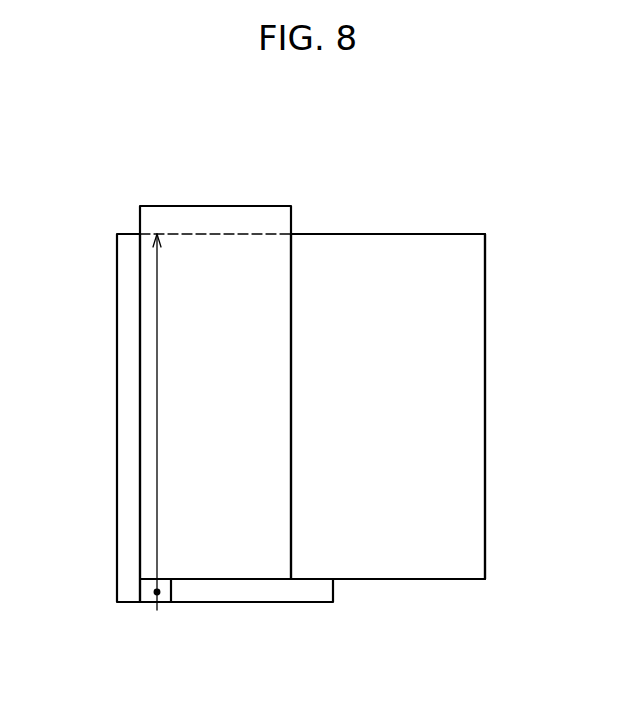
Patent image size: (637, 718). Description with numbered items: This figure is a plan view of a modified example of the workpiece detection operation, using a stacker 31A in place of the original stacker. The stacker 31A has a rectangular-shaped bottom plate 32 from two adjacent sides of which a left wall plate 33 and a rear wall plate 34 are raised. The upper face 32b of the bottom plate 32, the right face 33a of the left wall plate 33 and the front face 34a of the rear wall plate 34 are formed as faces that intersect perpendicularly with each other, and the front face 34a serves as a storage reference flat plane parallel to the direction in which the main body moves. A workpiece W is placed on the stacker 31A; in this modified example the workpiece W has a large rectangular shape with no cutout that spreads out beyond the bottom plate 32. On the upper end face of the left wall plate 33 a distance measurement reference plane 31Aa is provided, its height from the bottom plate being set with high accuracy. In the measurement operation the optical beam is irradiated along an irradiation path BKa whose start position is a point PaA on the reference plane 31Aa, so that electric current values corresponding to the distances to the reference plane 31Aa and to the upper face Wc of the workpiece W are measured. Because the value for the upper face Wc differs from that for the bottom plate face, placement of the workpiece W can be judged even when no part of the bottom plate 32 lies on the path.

The stacker 31A is at (291, 400).
The reference plane 31Aa is at (149, 603).
The bottom plate 32 is at (485, 323).
The upper face of the bottom plate 32b is at (470, 415).
The left wall plate 33 is at (282, 604).
The right face of the left wall plate 33a is at (238, 577).
The rear wall plate 34 is at (116, 505).
The front face of the rear wall plate 34a is at (152, 306).
The workpiece W is at (258, 205).
The upper face of the workpiece Wc is at (283, 297).
The irradiation path BKa is at (157, 457).
The point on the reference plane PaA is at (158, 594).